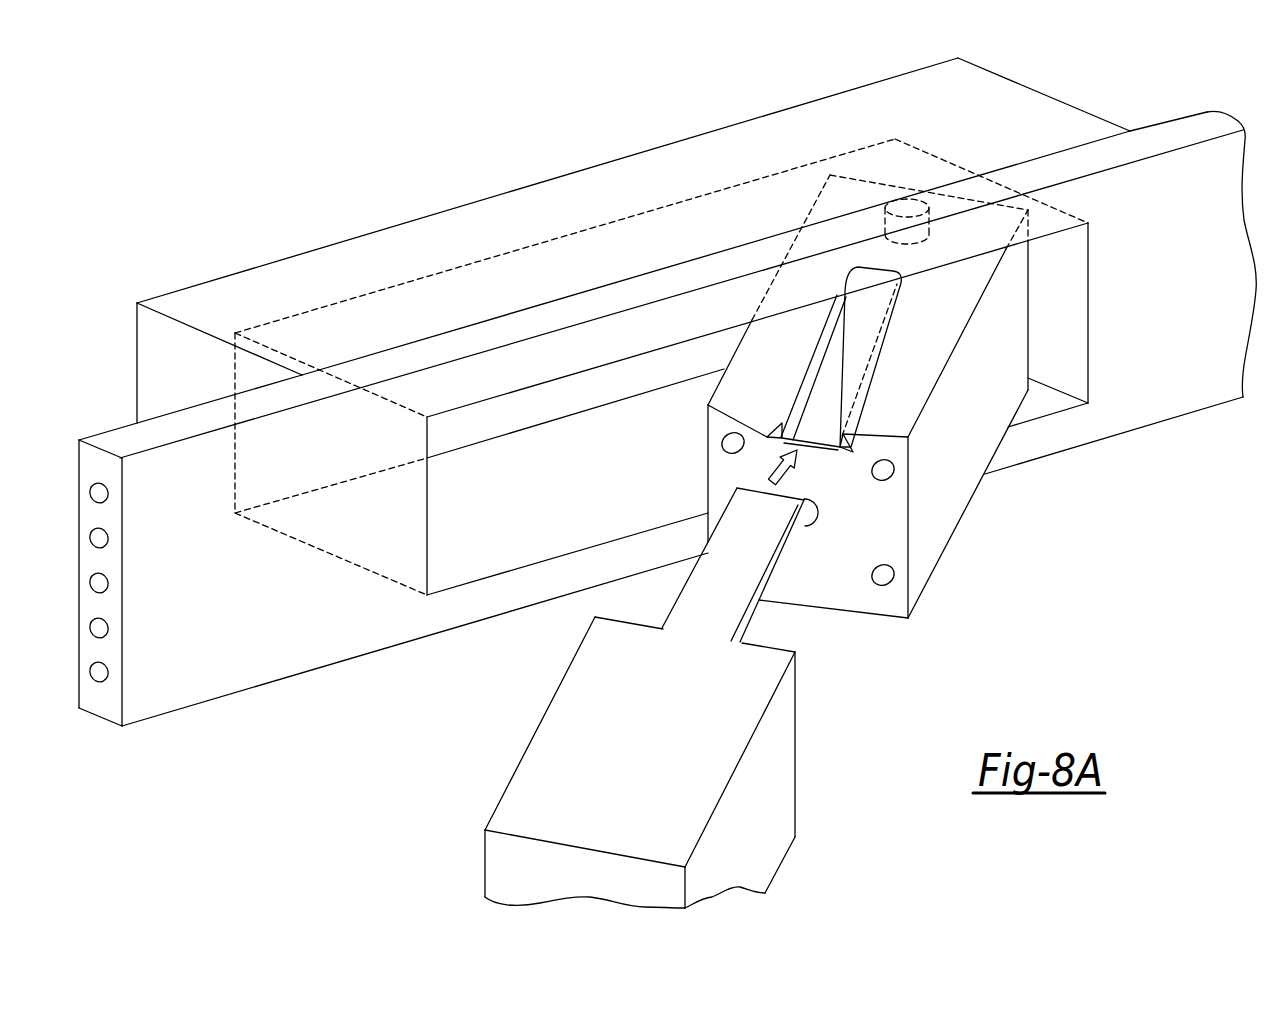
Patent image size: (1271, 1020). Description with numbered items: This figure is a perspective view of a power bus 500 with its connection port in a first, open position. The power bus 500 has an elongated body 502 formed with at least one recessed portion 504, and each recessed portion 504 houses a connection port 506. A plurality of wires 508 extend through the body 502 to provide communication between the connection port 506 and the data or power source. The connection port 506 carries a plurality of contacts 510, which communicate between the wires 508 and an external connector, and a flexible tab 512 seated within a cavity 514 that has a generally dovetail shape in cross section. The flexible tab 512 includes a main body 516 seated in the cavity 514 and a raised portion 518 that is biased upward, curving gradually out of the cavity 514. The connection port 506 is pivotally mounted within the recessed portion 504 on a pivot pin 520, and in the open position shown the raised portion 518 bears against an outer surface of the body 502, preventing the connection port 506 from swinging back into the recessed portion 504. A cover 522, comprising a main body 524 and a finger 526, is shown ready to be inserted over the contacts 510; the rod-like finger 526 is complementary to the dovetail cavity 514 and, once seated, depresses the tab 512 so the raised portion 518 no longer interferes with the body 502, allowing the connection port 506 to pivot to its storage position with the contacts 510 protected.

The power bus 500 is at (343, 798).
The elongated body 502 is at (226, 680).
The recessed portion 504 is at (412, 298).
The connection port 506 is at (985, 521).
The wires 508 is at (107, 672).
The contacts 510 is at (884, 588).
The flexible tab 512 is at (839, 353).
The cavity 514 is at (790, 402).
The main body 516 is at (847, 383).
The raised portion 518 is at (875, 300).
The pivot pin 520 is at (907, 204).
The cover 522 is at (820, 825).
The main body 524 is at (792, 742).
The finger 526 is at (778, 533).